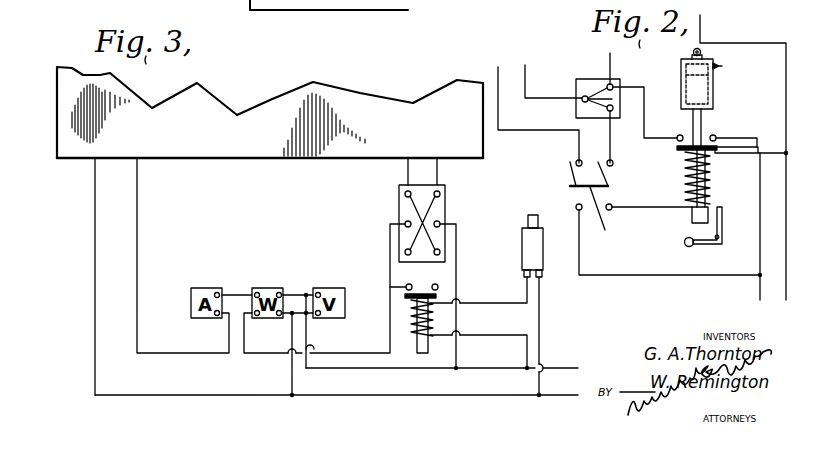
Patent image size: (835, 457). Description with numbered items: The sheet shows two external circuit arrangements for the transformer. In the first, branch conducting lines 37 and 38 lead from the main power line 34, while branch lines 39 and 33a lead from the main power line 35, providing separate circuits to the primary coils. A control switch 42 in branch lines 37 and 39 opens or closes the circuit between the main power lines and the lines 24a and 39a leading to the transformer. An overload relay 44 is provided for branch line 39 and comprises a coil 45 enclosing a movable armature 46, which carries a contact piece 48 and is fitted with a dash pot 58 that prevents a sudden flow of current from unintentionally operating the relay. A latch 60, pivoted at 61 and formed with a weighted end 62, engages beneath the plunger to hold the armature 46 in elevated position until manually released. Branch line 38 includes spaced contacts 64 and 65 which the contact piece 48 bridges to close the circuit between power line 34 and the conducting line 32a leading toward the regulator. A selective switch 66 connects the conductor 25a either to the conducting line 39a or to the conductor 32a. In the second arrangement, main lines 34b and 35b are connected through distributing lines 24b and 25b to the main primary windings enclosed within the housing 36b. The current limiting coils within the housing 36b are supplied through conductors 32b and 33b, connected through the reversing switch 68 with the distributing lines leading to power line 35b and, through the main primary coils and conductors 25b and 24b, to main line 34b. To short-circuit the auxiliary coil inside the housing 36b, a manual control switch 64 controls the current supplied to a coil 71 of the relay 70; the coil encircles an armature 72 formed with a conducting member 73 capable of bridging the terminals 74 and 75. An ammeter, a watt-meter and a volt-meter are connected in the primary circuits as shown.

In FIG. 2, the branch line 24a is at (533, 131).
In FIG. 2, the conductor 25a is at (553, 81).
In FIG. 2, the conducting line 32a is at (610, 70).
In FIG. 2, the branch line 33a is at (757, 45).
In FIG. 2, the selective switch 66 is at (590, 80).
In FIG. 2, the dash pot 58 is at (706, 101).
In FIG. 2, the contact 65 is at (679, 135).
In FIG. 3, the contact 64 is at (522, 236).
In FIG. 2, the contact 64 is at (717, 137).
In FIG. 2, the branch line 39 is at (745, 156).
In FIG. 2, the branch line 38 is at (757, 146).
In FIG. 2, the conducting line 39a is at (612, 145).
In FIG. 2, the contact piece 48 is at (682, 151).
In FIG. 2, the overload relay 44 is at (690, 194).
In FIG. 2, the coil 45 is at (708, 180).
In FIG. 2, the armature 46 is at (690, 213).
In FIG. 2, the latch 60 is at (723, 230).
In FIG. 2, the pivot 61 is at (724, 244).
In FIG. 2, the weighted end 62 is at (684, 245).
In FIG. 2, the control switch 42 is at (591, 206).
In FIG. 2, the branch line 37 is at (638, 277).
In FIG. 2, the main power line 34 is at (760, 293).
In FIG. 2, the main power line 35 is at (787, 250).
In FIG. 3, the housing 36b is at (270, 112).
In FIG. 3, the distributing line 24b is at (95, 266).
In FIG. 3, the distributing line 25b is at (137, 208).
In FIG. 3, the conductor 32b is at (408, 175).
In FIG. 3, the conductor 33b is at (437, 175).
In FIG. 3, the reversing switch 68 is at (442, 213).
In FIG. 3, the terminal 75 is at (406, 285).
In FIG. 3, the terminal 74 is at (438, 285).
In FIG. 3, the conducting member 73 is at (437, 297).
In FIG. 3, the relay 70 is at (420, 306).
In FIG. 3, the coil 71 is at (430, 322).
In FIG. 3, the armature 72 is at (430, 350).
In FIG. 3, the main line 35b is at (565, 368).
In FIG. 3, the main line 34b is at (560, 395).